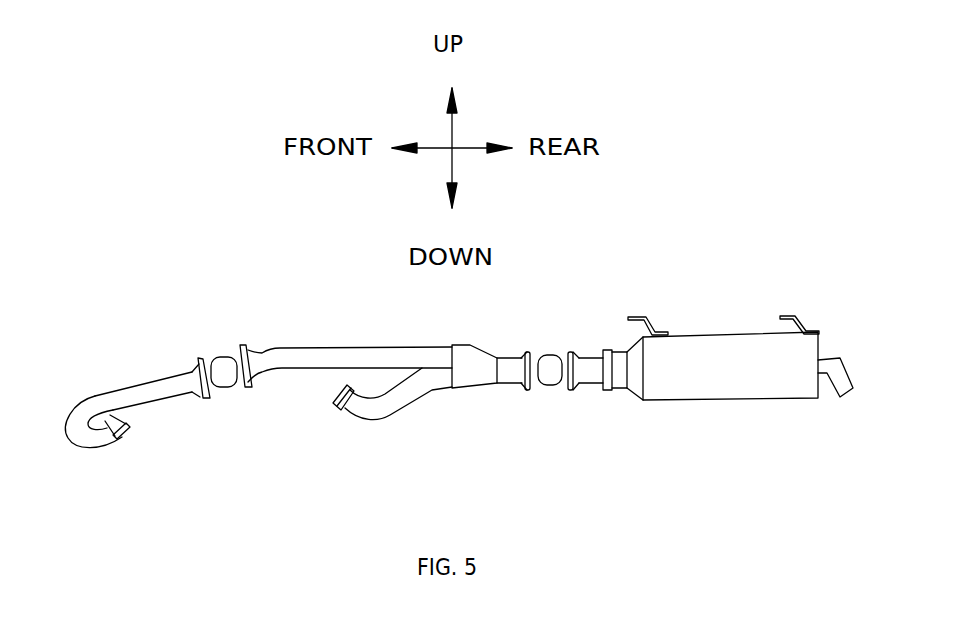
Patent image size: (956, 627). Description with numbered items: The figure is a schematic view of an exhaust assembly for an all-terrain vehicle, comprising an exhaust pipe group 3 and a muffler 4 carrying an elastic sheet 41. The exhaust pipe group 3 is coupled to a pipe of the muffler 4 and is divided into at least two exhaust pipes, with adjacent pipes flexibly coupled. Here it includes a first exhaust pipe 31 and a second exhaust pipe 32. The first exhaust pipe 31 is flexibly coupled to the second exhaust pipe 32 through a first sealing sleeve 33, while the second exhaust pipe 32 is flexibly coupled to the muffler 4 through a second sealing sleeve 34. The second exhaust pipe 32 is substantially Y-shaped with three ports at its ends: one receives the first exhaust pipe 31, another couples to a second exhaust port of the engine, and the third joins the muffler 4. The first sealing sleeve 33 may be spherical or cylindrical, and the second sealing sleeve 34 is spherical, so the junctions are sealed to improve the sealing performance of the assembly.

The exhaust pipe group 3 is at (283, 302).
The first exhaust pipe 31 is at (127, 393).
The second exhaust pipe 32 is at (422, 368).
The first sealing sleeve 33 is at (232, 375).
The second sealing sleeve 34 is at (558, 363).
The muffler 4 is at (738, 347).
The elastic sheet 41 is at (790, 317).